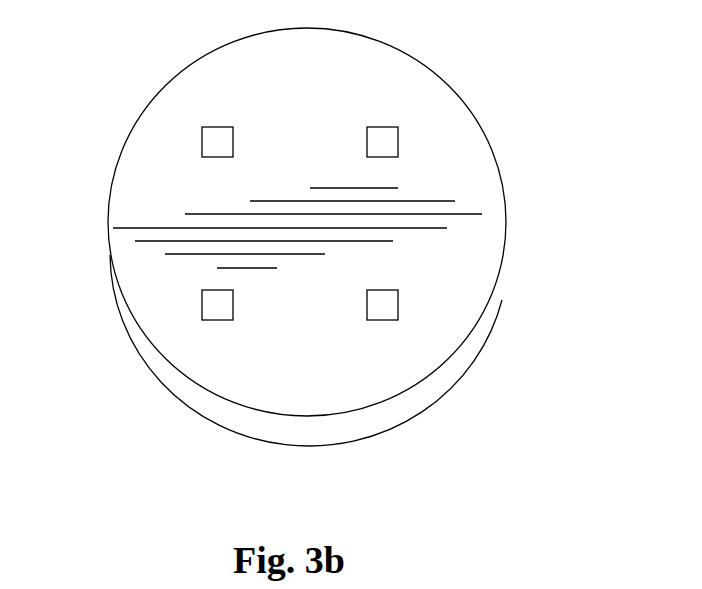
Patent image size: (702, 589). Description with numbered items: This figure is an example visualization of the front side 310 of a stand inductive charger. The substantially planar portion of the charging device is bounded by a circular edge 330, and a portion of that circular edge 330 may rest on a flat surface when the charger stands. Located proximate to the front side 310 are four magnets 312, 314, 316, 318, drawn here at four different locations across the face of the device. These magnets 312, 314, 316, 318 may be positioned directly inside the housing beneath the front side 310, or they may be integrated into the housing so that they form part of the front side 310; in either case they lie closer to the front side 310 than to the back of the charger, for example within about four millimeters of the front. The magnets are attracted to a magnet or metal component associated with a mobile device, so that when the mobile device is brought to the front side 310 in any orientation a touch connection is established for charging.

The front side 310 is at (337, 95).
The magnet 312 is at (382, 142).
The magnet 314 is at (382, 307).
The magnet 316 is at (217, 305).
The magnet 318 is at (217, 140).
The circular edge 330 is at (362, 417).